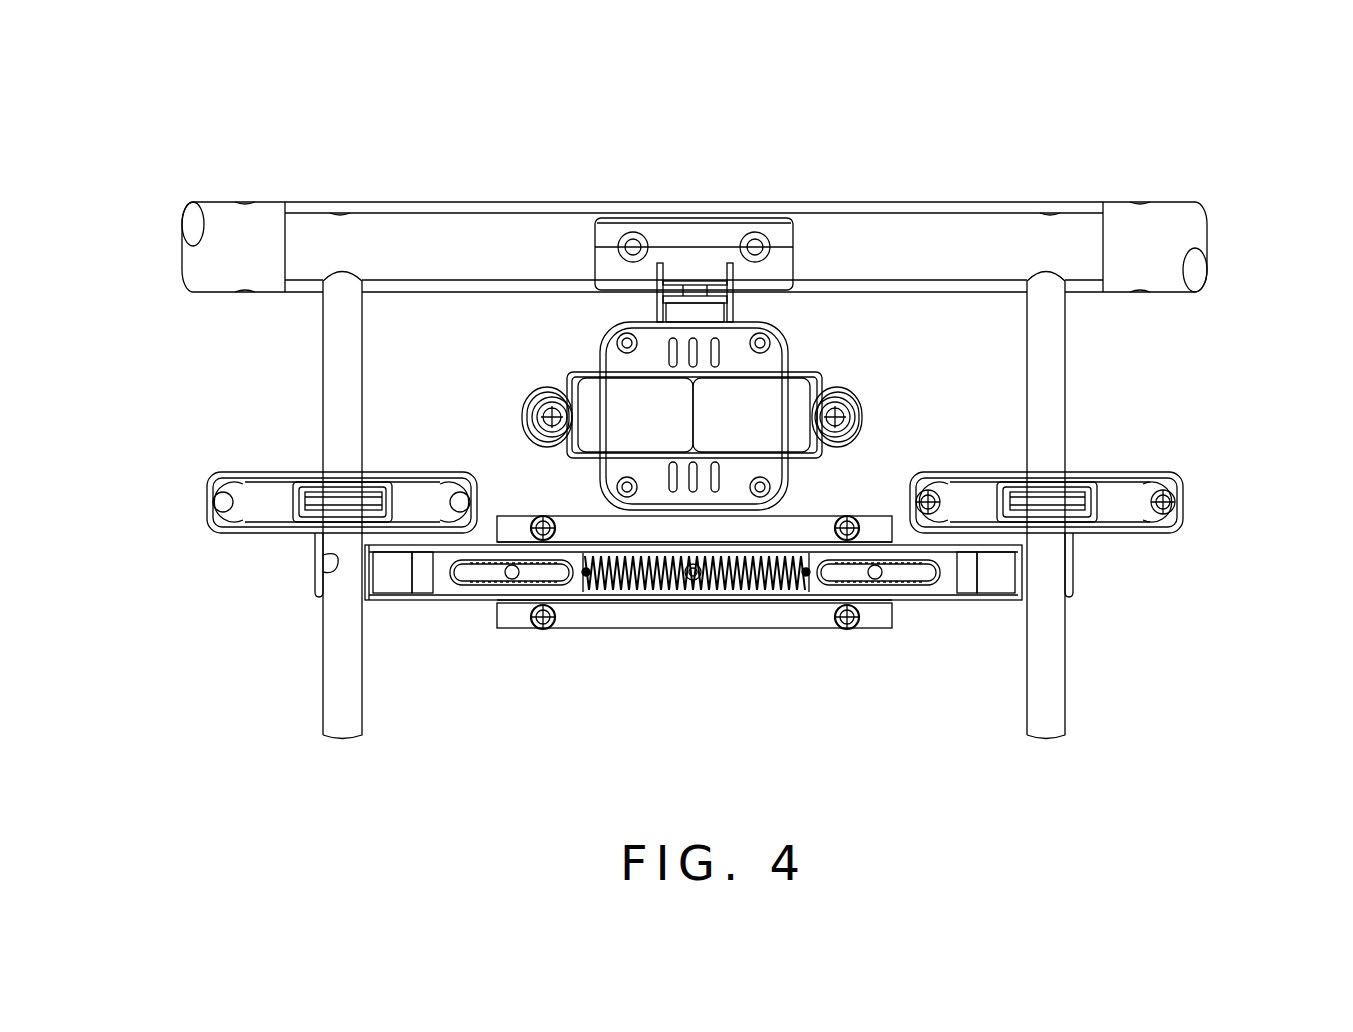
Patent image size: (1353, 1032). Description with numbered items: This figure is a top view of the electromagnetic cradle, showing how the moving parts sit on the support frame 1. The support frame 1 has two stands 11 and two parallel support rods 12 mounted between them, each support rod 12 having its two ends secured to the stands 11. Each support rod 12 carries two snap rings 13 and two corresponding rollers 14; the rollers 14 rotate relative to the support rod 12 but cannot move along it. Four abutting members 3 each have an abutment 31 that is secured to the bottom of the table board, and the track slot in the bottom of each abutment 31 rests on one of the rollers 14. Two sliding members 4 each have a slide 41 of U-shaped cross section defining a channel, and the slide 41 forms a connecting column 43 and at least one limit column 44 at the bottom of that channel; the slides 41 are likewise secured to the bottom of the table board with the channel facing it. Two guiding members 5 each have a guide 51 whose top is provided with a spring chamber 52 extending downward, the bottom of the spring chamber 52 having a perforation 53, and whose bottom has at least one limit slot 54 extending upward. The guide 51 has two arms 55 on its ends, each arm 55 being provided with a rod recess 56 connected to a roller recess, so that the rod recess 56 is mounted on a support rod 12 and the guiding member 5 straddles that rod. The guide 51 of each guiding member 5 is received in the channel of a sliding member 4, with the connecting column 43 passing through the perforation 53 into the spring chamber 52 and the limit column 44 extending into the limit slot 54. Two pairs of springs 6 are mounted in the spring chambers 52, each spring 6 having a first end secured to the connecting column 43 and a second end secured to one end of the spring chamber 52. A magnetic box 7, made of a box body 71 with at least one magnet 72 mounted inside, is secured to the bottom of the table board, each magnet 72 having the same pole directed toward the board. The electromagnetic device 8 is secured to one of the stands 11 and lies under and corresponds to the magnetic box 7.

The support frame 1 is at (753, 447).
The stand 11 is at (1090, 285).
The support rod 12 is at (1052, 345).
The abutting member 3 is at (1107, 574).
The snap ring 13 is at (1073, 490).
The roller 14 is at (1070, 502).
The abutment 31 is at (1132, 535).
The guiding member 5 is at (614, 650).
The guide 51 is at (436, 600).
The limit slot 54 is at (478, 580).
The arm 55 is at (315, 600).
The rod recess 56 is at (333, 560).
The sliding member 4 is at (737, 679).
The slide 41 is at (870, 622).
The connecting column 43 is at (702, 578).
The limit column 44 is at (888, 578).
The spring 6 is at (630, 565).
The spring chamber 52 is at (657, 578).
The perforation 53 is at (692, 578).
The magnetic box 7 is at (787, 260).
The box body 71 is at (810, 372).
The magnet 72 is at (760, 408).
The electromagnetic device 8 is at (617, 360).